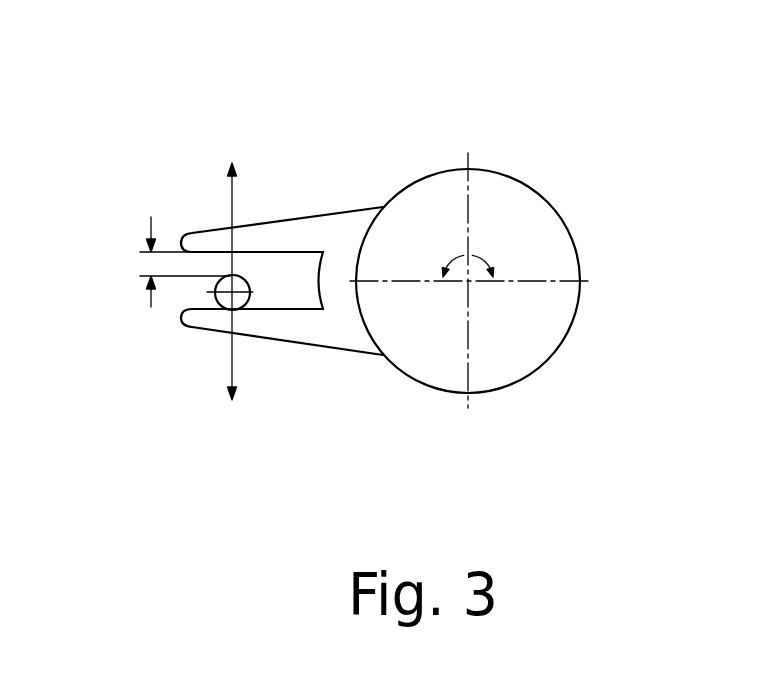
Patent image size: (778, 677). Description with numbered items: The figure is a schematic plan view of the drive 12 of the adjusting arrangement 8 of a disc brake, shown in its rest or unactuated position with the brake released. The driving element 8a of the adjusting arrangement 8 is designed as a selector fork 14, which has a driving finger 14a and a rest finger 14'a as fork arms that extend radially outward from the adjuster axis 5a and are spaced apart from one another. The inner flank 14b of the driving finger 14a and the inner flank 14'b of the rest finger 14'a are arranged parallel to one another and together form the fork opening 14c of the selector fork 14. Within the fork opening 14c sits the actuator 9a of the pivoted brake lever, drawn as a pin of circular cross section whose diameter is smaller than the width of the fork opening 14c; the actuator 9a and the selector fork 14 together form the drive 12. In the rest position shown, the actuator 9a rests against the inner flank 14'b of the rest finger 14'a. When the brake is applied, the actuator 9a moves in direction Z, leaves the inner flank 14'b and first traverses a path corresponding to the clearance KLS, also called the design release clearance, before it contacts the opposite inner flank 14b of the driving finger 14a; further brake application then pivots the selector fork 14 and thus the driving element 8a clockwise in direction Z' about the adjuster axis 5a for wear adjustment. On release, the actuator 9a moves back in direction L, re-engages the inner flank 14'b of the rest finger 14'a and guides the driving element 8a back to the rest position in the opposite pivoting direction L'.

The adjusting arrangement 8 is at (487, 217).
The driving element 8a is at (563, 196).
The adjuster axis 5a is at (468, 281).
The selector fork 14 is at (234, 266).
The driving finger 14a is at (288, 232).
The rest finger 14'a is at (296, 390).
The inner flank of the driving finger 14b is at (282, 253).
The inner flank of the rest finger 14'b is at (265, 201).
The fork opening 14c is at (131, 307).
The drive 12 is at (130, 192).
The actuator 9a is at (227, 293).
The clearance KLS is at (148, 265).
The direction Z is at (231, 255).
The direction L is at (236, 420).
The pivoting direction Z' is at (500, 241).
The pivoting direction L' is at (441, 241).